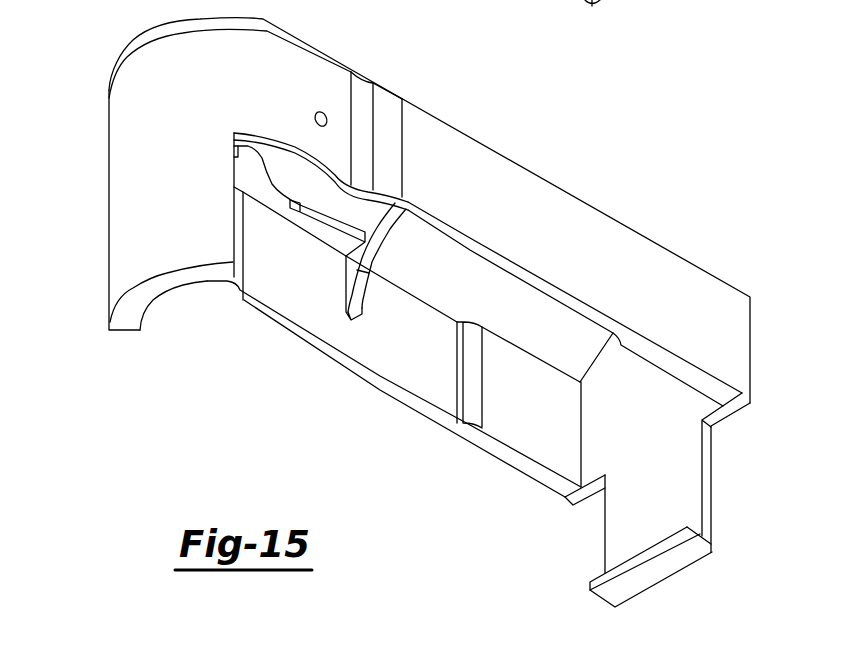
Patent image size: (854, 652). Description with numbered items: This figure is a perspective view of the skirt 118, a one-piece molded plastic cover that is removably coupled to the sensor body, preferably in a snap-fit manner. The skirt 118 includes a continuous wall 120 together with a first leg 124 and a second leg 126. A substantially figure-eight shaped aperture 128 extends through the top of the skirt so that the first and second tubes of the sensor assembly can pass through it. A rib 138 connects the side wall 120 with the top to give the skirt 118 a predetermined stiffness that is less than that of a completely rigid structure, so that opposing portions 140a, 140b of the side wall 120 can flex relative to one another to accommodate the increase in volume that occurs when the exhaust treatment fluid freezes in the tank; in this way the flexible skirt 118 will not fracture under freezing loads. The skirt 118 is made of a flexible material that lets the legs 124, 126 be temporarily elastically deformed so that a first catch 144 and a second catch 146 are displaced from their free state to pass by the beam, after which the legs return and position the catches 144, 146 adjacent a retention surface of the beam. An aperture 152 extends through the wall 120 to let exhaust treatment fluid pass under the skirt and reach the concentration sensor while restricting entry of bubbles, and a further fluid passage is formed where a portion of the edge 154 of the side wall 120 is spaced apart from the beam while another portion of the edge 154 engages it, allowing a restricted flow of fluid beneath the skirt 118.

The skirt 118 is at (694, 235).
The continuous wall 120 is at (600, 235).
The first leg 124 is at (667, 497).
The second leg 126 is at (122, 239).
The figure-eight shaped aperture 128 is at (278, 198).
The rib 138 is at (380, 240).
The opposing portion of side wall 140a is at (337, 358).
The opposing portion of side wall 140b is at (518, 272).
The first catch 144 is at (643, 577).
The second catch 146 is at (121, 322).
The aperture 152 is at (313, 116).
The edge 154 is at (270, 320).